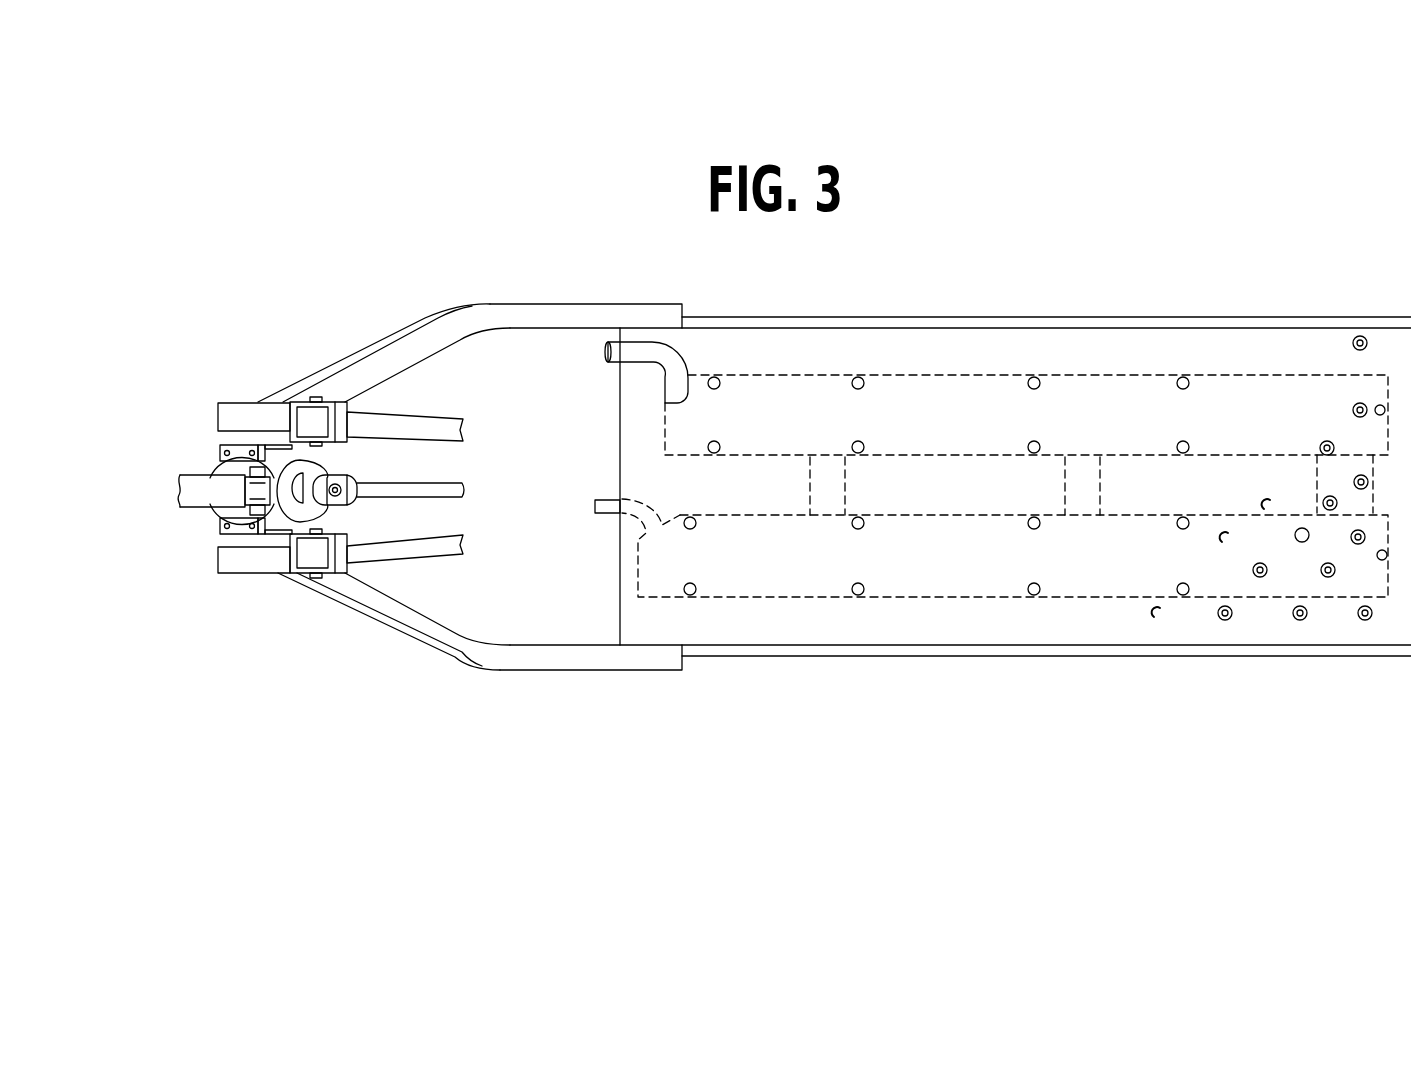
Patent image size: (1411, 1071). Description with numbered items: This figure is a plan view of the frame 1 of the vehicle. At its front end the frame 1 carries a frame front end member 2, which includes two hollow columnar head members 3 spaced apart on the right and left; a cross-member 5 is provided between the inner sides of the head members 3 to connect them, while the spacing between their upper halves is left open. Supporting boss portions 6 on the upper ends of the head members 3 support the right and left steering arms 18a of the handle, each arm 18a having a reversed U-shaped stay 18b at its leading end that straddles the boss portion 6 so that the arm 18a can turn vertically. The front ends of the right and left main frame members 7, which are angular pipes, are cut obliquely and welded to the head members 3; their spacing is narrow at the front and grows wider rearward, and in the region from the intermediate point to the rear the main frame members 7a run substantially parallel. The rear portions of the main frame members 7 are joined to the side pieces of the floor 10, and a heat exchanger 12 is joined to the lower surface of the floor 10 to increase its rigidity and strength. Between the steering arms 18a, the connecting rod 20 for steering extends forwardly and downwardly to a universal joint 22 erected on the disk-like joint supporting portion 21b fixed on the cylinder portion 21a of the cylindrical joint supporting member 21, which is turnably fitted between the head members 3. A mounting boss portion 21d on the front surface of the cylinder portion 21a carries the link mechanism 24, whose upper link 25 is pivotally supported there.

The frame 1 is at (328, 332).
The frame front end member 2 is at (232, 392).
The head member 3 is at (265, 417).
The cross-member 5 is at (387, 426).
The supporting boss portion 6 is at (322, 423).
The main frame member 7 is at (477, 297).
The main frame member 7a is at (548, 304).
The floor 10 is at (1112, 338).
The heat exchanger 12 is at (1111, 600).
The steering arm 18a is at (397, 406).
The stay 18b is at (304, 397).
The connecting rod 20 is at (448, 482).
The joint supporting member 21 is at (266, 526).
The cylinder portion 21a is at (258, 452).
The joint supporting portion 21b is at (276, 536).
The mounting boss portion 21d is at (258, 496).
The universal joint 22 is at (360, 515).
The link mechanism 24 is at (160, 487).
The upper link 25 is at (197, 494).